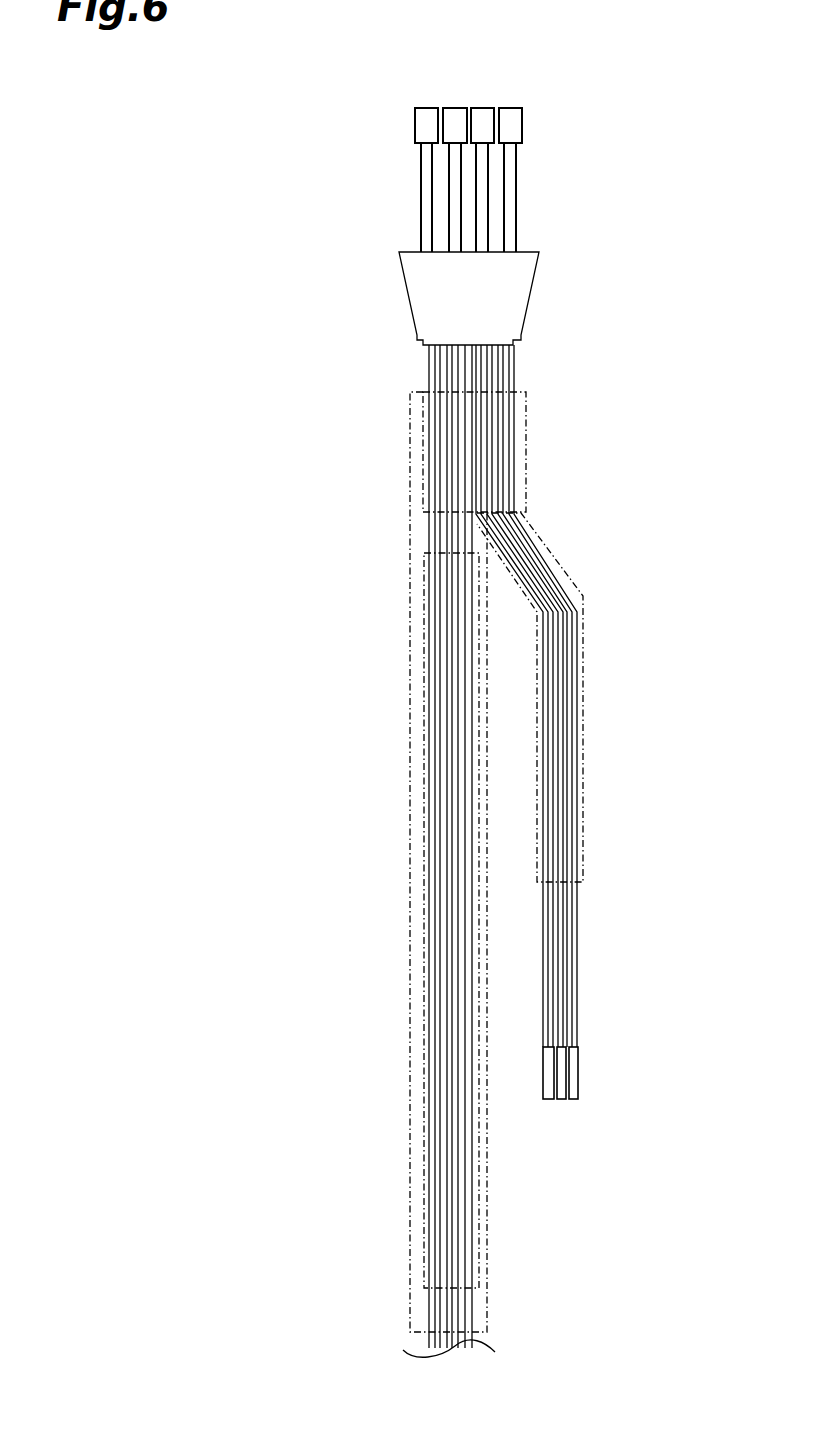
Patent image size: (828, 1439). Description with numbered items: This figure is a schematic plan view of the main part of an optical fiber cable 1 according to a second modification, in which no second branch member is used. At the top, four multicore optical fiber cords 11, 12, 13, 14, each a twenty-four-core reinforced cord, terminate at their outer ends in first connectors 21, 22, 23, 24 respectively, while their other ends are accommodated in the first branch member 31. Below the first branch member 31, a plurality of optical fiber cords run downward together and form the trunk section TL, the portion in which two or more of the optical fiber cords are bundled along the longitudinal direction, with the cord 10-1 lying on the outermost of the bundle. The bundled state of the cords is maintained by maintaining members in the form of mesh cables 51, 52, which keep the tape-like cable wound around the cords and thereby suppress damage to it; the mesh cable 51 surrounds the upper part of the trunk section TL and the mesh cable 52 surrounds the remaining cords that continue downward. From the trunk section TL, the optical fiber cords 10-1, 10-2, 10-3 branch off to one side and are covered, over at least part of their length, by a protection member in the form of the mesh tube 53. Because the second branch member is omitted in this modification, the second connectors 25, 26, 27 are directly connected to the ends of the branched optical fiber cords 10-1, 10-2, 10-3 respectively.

The optical fiber cable 1 is at (641, 177).
The multicore optical fiber cord 11 is at (515, 212).
The multicore optical fiber cord 12 is at (488, 175).
The multicore optical fiber cord 13 is at (450, 211).
The multicore optical fiber cord 14 is at (421, 177).
The first connector 21 is at (513, 115).
The first connector 22 is at (485, 115).
The first connector 23 is at (453, 115).
The first connector 24 is at (425, 115).
The second connector 25 is at (573, 1100).
The second connector 26 is at (561, 1100).
The second connector 27 is at (546, 1100).
The first branch member 31 is at (517, 294).
The mesh cable 51 is at (532, 425).
The mesh cable 52 is at (423, 602).
The mesh tube 53 is at (548, 552).
The trunk section TL is at (410, 447).
The optical fiber cord 10-1 is at (575, 672).
The optical fiber cord 10-2 is at (562, 722).
The optical fiber cord 10-3 is at (550, 772).